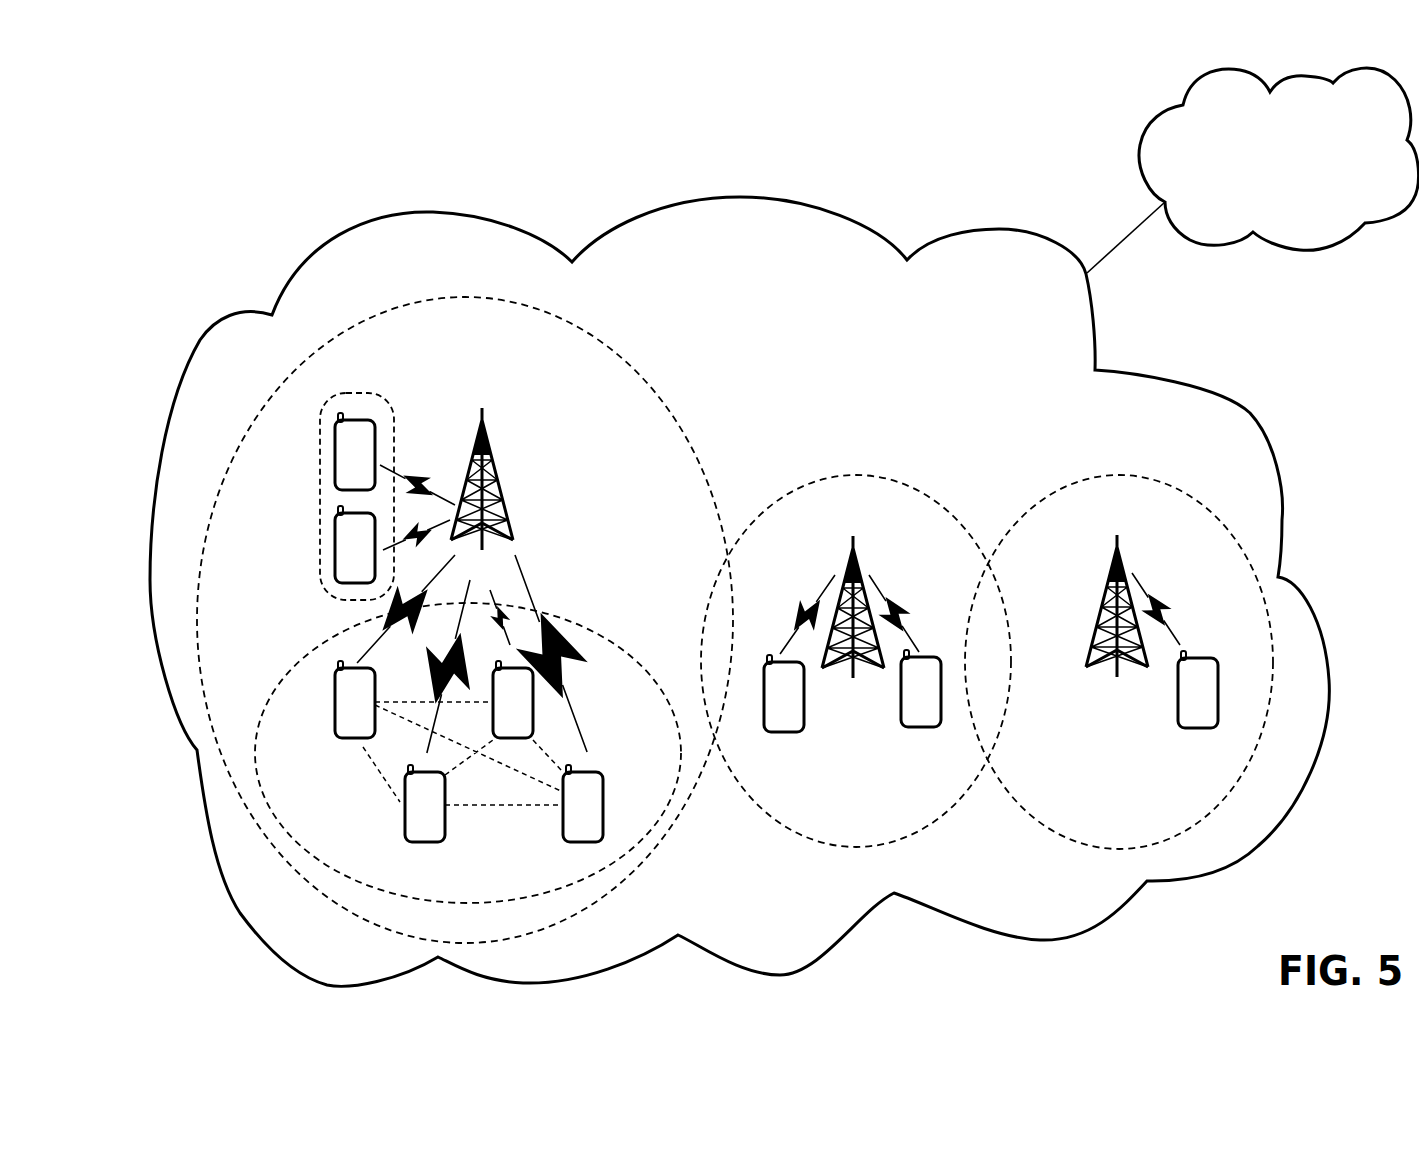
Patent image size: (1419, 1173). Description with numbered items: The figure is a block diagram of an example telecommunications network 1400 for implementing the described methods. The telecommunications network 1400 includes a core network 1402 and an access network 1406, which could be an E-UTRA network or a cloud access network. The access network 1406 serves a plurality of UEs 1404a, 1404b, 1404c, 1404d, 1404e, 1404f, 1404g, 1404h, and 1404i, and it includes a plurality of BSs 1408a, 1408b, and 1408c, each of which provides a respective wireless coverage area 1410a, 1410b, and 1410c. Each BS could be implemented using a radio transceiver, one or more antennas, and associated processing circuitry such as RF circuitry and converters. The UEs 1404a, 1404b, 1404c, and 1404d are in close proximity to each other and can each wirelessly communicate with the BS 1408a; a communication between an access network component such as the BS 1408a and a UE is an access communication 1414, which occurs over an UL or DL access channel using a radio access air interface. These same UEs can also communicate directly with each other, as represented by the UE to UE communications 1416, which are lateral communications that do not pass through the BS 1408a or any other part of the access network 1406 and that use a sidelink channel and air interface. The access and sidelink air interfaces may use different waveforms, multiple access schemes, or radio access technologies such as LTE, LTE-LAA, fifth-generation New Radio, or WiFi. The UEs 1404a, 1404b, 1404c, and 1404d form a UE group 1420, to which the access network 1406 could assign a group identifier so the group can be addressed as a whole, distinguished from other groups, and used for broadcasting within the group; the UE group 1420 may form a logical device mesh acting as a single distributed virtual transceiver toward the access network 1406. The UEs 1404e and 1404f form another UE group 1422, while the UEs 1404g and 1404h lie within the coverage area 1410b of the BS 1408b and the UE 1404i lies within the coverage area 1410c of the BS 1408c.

The telecommunications network 1400 is at (316, 149).
The core network 1402 is at (1307, 188).
The access network 1406 is at (668, 211).
The wireless coverage area 1410a is at (417, 298).
The wireless coverage area 1410b is at (816, 475).
The wireless coverage area 1410c is at (1077, 476).
The BS 1408a is at (487, 432).
The BS 1408b is at (851, 553).
The BS 1408c is at (1120, 553).
The UE 1404a is at (335, 724).
The UE 1404b is at (405, 826).
The UE 1404c is at (603, 795).
The UE 1404d is at (533, 703).
The UE 1404e is at (335, 548).
The UE 1404f is at (335, 466).
The UE 1404g is at (784, 733).
The UE 1404h is at (915, 728).
The UE 1404i is at (1200, 729).
The access communication 1414 is at (381, 630).
The UE to UE communications 1416 is at (505, 822).
The UE group 1420 is at (608, 643).
The UE group 1422 is at (394, 412).